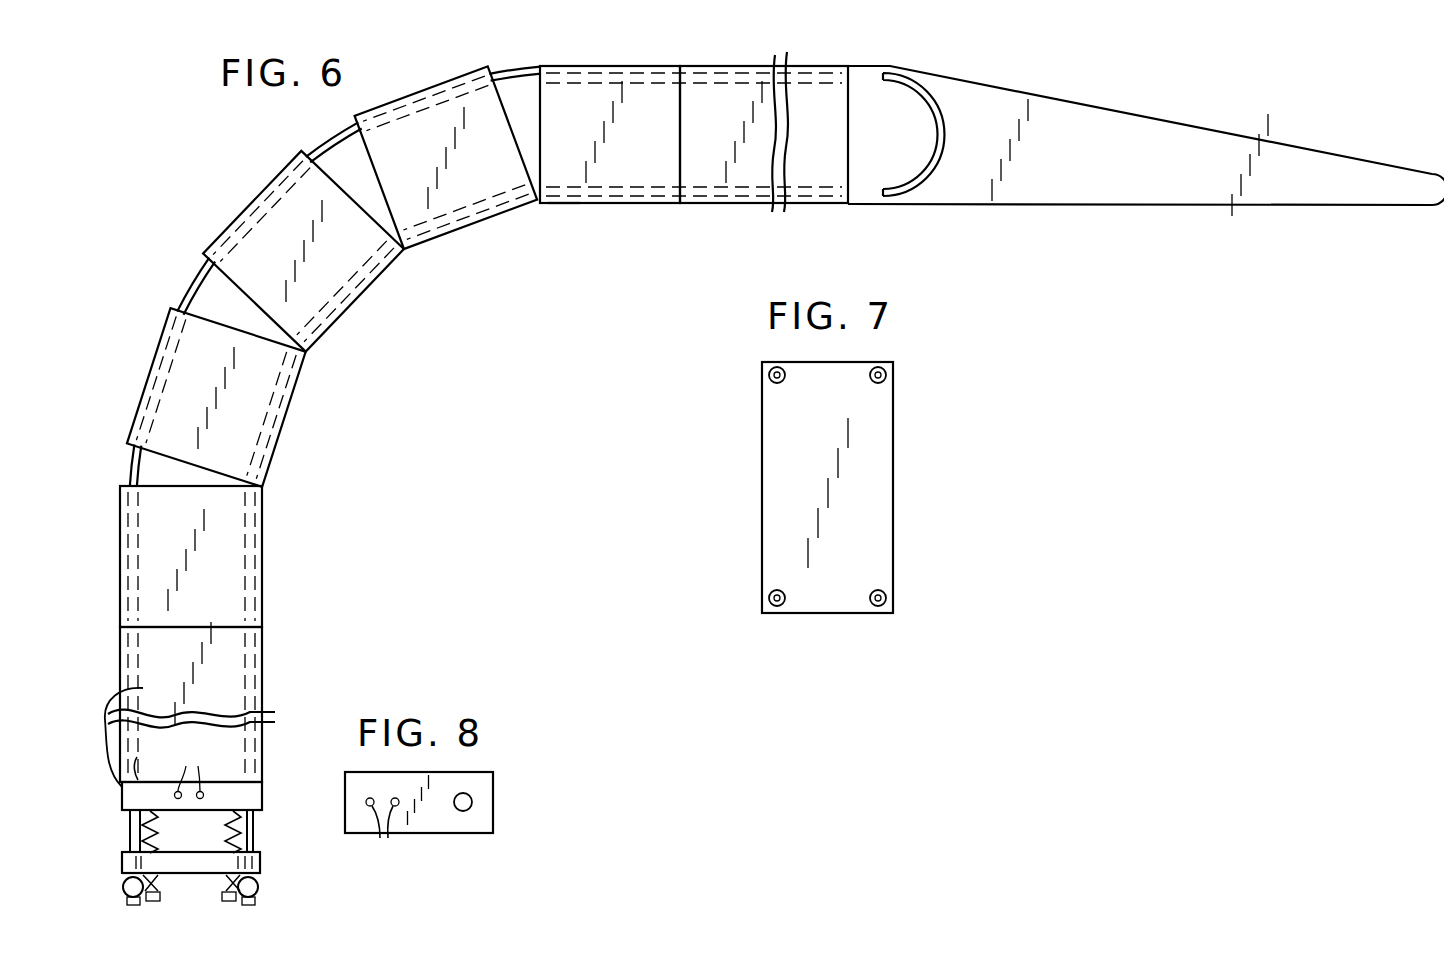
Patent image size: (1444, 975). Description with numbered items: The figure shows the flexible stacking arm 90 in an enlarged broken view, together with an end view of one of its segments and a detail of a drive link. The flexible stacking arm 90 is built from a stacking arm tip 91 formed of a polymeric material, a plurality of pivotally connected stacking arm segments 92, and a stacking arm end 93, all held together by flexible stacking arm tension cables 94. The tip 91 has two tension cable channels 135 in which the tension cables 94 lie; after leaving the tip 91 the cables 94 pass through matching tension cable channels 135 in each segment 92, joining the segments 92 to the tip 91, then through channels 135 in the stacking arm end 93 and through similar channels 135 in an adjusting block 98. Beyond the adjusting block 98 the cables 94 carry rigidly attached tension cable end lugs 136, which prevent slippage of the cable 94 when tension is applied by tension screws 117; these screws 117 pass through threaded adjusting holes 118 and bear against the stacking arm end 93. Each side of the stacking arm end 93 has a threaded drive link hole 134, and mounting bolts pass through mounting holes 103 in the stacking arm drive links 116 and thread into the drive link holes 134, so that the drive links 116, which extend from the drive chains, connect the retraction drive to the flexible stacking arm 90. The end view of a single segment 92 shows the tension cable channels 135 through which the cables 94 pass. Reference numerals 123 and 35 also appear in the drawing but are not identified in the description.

In FIG. 6, the flexible stacking arm 90 is at (236, 177).
In FIG. 6, the stacking arm tip 91 is at (1183, 205).
In FIG. 6, the stacking arm segment 92 is at (393, 267).
In FIG. 7, the stacking arm segment 92 is at (762, 418).
In FIG. 6, the stacking arm end 93 is at (190, 731).
In FIG. 6, the tension cable 94 is at (627, 204).
In FIG. 6, the adjusting block 98 is at (262, 862).
In FIG. 8, the mounting hole 103 is at (383, 831).
In FIG. 8, the stacking arm drive link 116 is at (423, 834).
In FIG. 6, the tension screw 117 is at (240, 895).
In FIG. 6, the threaded adjusting hole 118 is at (212, 860).
In FIG. 6, the hinge joint 123 is at (566, 205).
In FIG. 6, the drive link hole 134 is at (193, 771).
In FIG. 8, the drive link hole 134 is at (472, 802).
In FIG. 6, the tension cable channel 135 is at (930, 170).
In FIG. 7, the tension cable channel 135 is at (786, 376).
In FIG. 6, the tension cable end lug 136 is at (259, 887).
In FIG. 6, the lead wire 35 is at (137, 757).